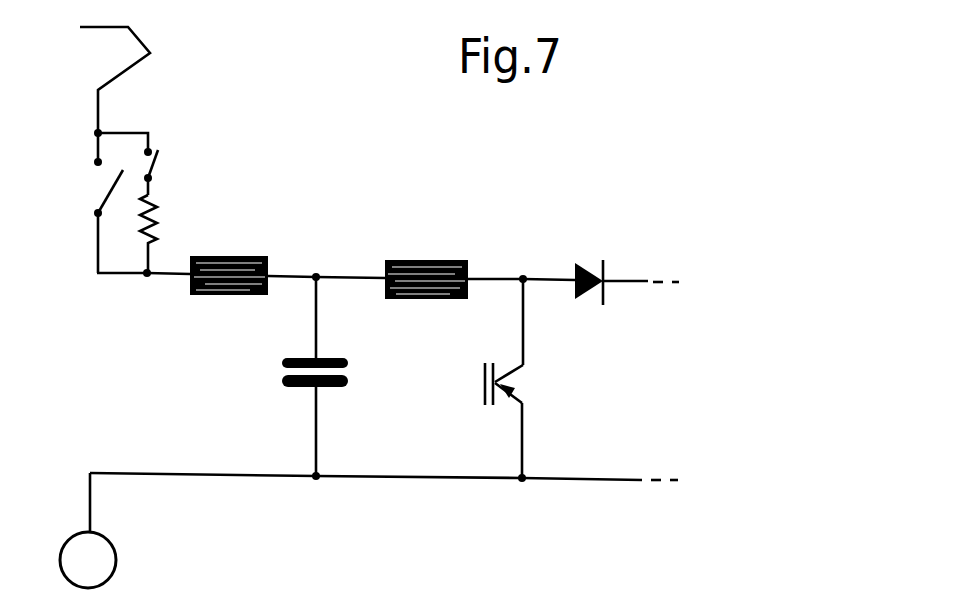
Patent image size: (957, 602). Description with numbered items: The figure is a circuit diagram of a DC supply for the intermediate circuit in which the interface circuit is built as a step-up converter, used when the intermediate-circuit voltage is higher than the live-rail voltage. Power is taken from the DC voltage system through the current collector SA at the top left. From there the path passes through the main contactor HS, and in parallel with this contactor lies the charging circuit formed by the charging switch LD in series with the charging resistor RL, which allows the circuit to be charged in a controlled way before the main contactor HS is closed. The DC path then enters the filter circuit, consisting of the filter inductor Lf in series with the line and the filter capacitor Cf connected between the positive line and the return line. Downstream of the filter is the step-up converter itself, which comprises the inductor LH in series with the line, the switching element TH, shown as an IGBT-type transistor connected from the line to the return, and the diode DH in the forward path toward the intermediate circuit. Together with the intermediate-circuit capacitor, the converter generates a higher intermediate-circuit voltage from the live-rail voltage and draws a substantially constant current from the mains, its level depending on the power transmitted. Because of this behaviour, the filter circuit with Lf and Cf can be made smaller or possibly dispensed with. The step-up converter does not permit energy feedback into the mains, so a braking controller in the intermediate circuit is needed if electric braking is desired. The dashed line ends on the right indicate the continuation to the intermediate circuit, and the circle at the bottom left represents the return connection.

The current collector SA is at (97, 89).
The main contactor HS is at (86, 203).
The charging switch LD is at (169, 161).
The charging resistor RL is at (175, 236).
The filter inductor Lf is at (229, 310).
The filter capacitor Cf is at (337, 376).
The inductor LH is at (426, 253).
The diode DH is at (570, 259).
The switching element TH is at (528, 380).